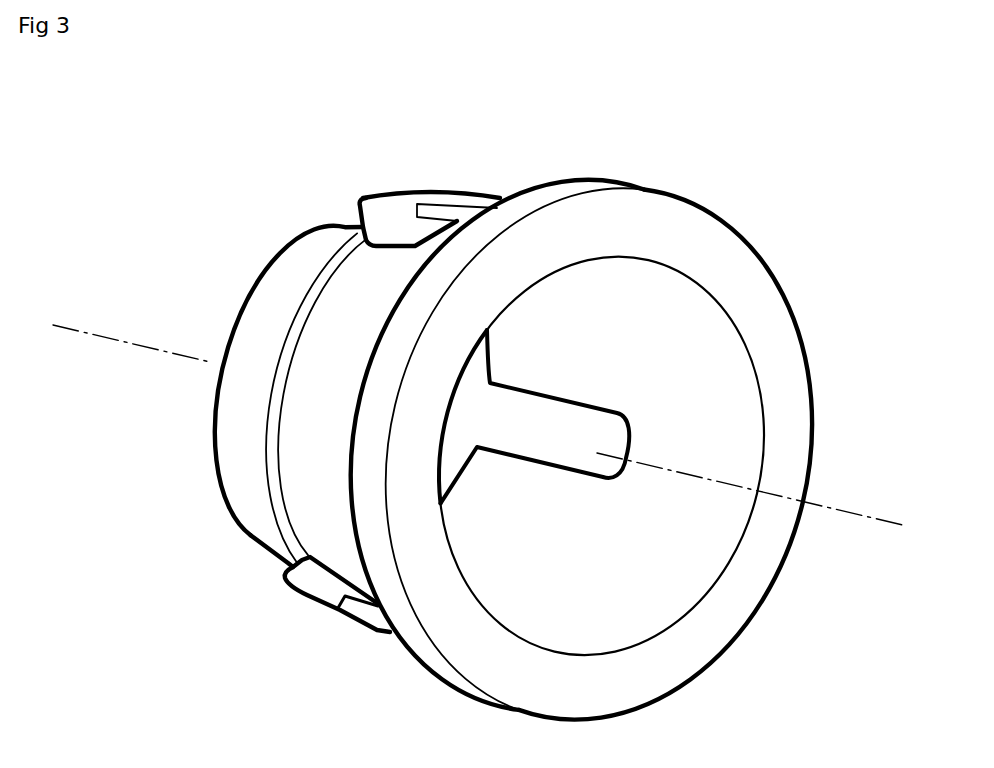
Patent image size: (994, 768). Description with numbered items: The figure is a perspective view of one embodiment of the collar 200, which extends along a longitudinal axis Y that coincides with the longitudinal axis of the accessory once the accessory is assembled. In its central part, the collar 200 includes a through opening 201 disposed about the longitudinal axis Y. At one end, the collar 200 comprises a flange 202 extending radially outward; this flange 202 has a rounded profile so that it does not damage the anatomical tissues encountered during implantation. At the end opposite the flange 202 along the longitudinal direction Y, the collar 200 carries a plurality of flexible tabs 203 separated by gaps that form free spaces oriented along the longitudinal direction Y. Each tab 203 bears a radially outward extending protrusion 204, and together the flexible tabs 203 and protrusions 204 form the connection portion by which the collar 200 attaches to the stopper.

The collar 200 is at (288, 637).
The through opening 201 is at (657, 563).
The flange 202 is at (777, 318).
The flexible tabs 203 is at (468, 213).
The protrusion 204 is at (403, 195).
The longitudinal axis Y is at (910, 528).